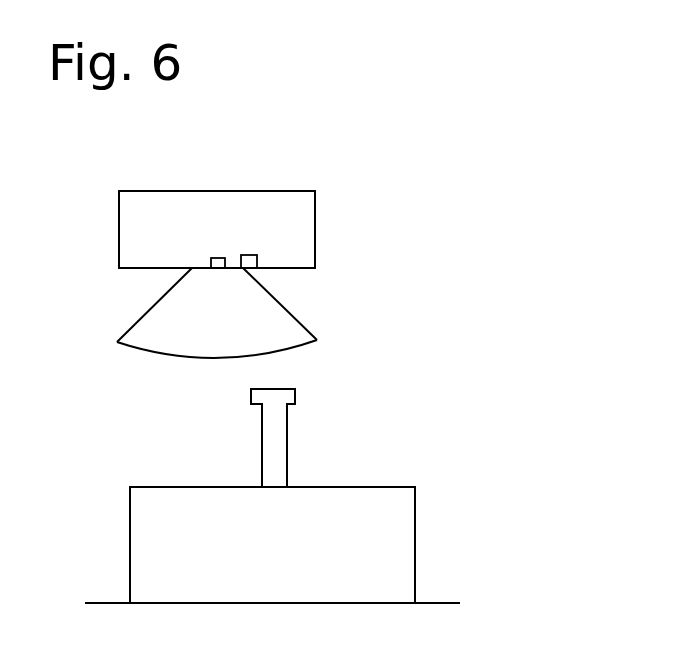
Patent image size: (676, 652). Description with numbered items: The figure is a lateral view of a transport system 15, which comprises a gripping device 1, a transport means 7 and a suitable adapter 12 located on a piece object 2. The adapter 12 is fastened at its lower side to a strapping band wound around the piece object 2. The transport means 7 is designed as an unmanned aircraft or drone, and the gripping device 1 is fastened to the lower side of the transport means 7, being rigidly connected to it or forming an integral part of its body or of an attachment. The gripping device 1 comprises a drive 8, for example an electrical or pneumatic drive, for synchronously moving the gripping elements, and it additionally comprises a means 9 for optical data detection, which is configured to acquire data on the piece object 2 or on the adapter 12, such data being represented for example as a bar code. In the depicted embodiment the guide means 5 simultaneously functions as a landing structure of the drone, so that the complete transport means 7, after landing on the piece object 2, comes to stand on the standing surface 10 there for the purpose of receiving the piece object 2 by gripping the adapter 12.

The gripping device 1 is at (136, 298).
The piece object 2 is at (416, 545).
The guide means 5 is at (300, 318).
The transport means 7 is at (316, 223).
The drive 8 is at (247, 254).
The means for the optical data detection 9 is at (217, 257).
The standing surface 10 is at (155, 353).
The adapter 12 is at (288, 473).
The transport system 15 is at (358, 260).